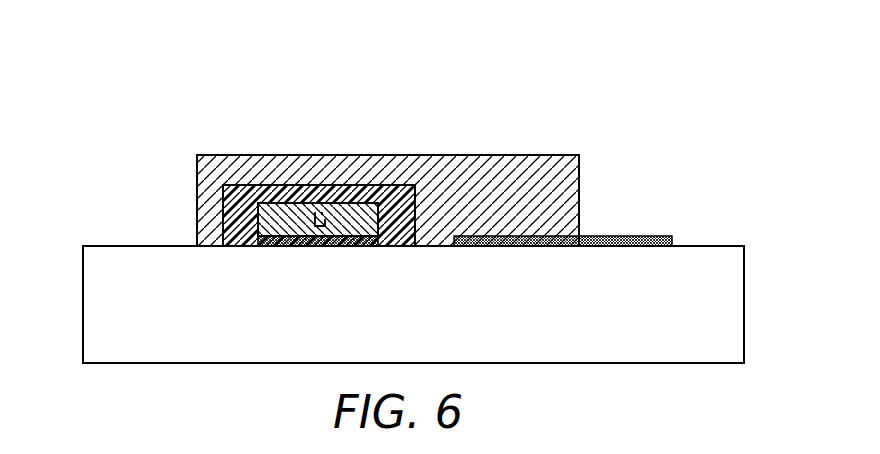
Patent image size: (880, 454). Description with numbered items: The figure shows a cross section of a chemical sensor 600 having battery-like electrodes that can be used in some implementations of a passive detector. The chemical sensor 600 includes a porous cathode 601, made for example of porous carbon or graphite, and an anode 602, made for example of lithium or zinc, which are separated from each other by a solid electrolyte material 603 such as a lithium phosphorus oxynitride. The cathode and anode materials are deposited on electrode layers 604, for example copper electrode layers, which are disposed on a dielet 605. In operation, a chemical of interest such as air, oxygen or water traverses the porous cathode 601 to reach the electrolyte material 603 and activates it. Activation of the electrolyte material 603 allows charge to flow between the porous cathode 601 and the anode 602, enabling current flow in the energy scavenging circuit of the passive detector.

The chemical sensor 600 is at (607, 58).
The porous cathode 601 is at (462, 155).
The anode 602 is at (286, 212).
The electrolyte material 603 is at (380, 202).
The electrode layers 604 is at (285, 247).
The dielet 605 is at (83, 299).